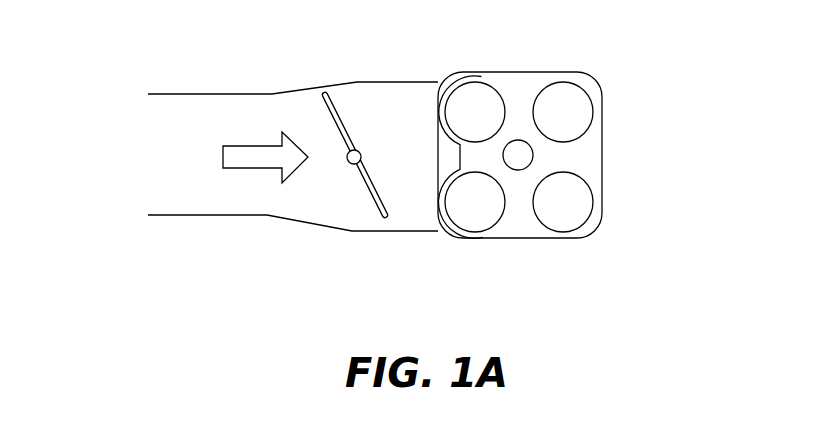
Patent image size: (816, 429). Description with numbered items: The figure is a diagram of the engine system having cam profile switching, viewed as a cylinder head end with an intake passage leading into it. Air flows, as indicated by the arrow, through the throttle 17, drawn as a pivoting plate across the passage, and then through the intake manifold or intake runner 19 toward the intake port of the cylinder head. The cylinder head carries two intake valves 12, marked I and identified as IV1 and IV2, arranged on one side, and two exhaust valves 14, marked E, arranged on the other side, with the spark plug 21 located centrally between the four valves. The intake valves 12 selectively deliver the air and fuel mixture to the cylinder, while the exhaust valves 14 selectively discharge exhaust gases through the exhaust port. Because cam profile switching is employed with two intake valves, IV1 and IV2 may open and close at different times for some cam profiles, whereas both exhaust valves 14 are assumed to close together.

The intake valve 12 is at (478, 159).
The exhaust valve 14 is at (573, 78).
The first intake valve IV1 is at (485, 78).
The second intake valve IV2 is at (483, 237).
The spark plug 21 is at (533, 153).
The throttle 17 is at (368, 190).
The intake manifold 19 is at (419, 192).